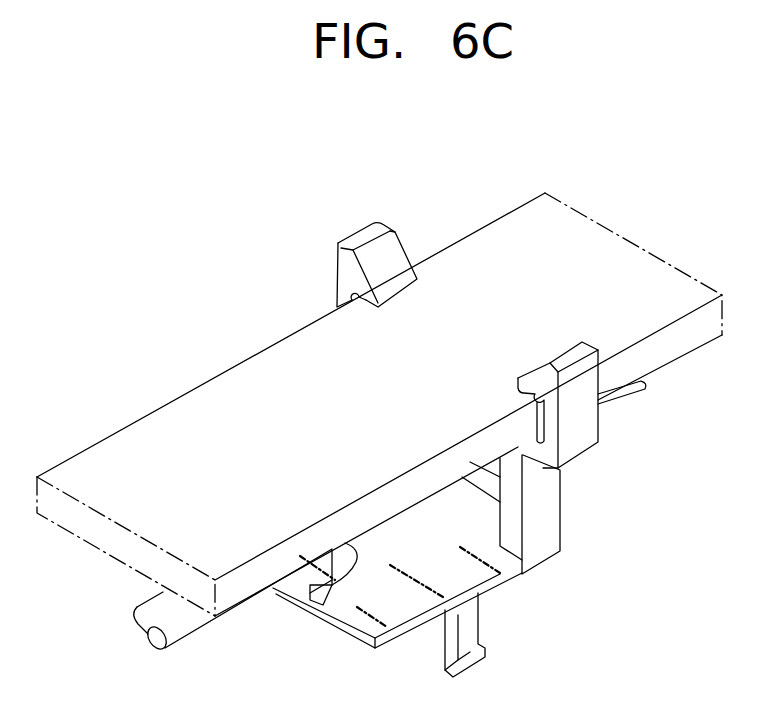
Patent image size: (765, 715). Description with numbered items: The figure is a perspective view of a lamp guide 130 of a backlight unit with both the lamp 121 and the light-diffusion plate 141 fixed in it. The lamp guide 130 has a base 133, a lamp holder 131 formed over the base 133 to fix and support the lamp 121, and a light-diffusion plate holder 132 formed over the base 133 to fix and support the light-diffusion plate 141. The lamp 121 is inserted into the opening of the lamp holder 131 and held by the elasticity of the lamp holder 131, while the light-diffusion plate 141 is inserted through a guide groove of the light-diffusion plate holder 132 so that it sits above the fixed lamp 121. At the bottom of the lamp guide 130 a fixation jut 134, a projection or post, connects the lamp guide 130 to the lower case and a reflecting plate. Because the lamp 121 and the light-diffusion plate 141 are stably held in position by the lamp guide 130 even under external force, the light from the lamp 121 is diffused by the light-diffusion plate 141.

The lamp 121 is at (183, 630).
The lamp guide 130 is at (585, 562).
The lamp holder 131 is at (325, 570).
The light-diffusion plate holder 132 is at (588, 432).
The base 133 is at (478, 573).
The fixation jut 134 is at (472, 622).
The light-diffusion plate 141 is at (635, 258).